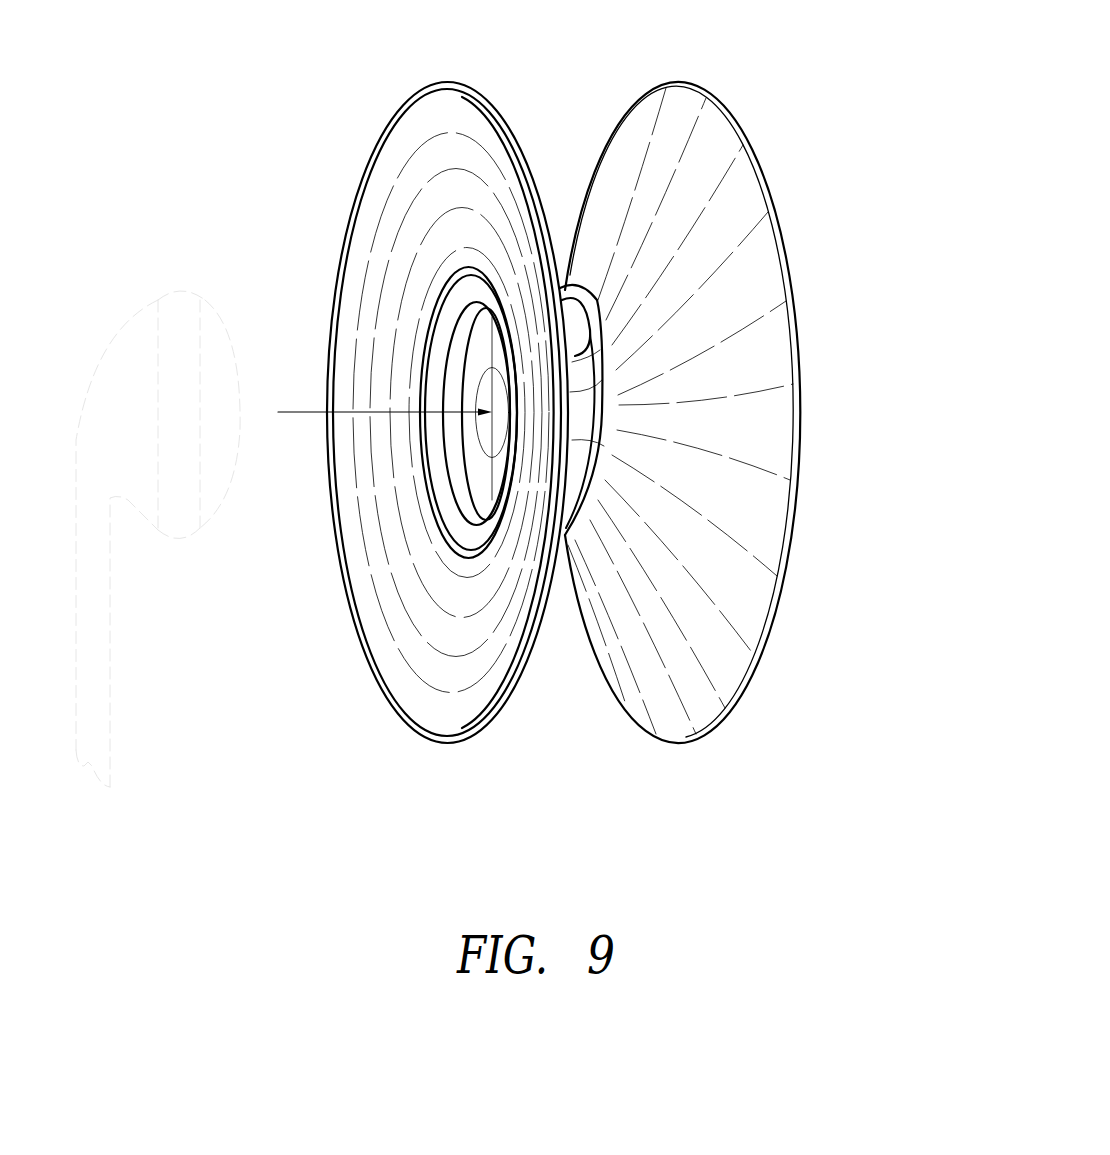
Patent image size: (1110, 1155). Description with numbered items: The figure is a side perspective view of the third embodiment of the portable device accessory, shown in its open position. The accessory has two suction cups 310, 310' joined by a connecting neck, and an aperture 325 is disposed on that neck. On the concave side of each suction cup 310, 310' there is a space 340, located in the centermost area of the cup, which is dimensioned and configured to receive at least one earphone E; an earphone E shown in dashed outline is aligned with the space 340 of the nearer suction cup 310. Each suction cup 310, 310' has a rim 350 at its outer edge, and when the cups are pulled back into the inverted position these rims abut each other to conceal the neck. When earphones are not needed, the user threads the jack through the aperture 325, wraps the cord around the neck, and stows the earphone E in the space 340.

The suction cup 310 is at (409, 412).
The suction cup 310' is at (767, 412).
The aperture 325 is at (572, 327).
The space 340 is at (455, 493).
The rim 350 is at (401, 96).
The earphone E is at (140, 313).